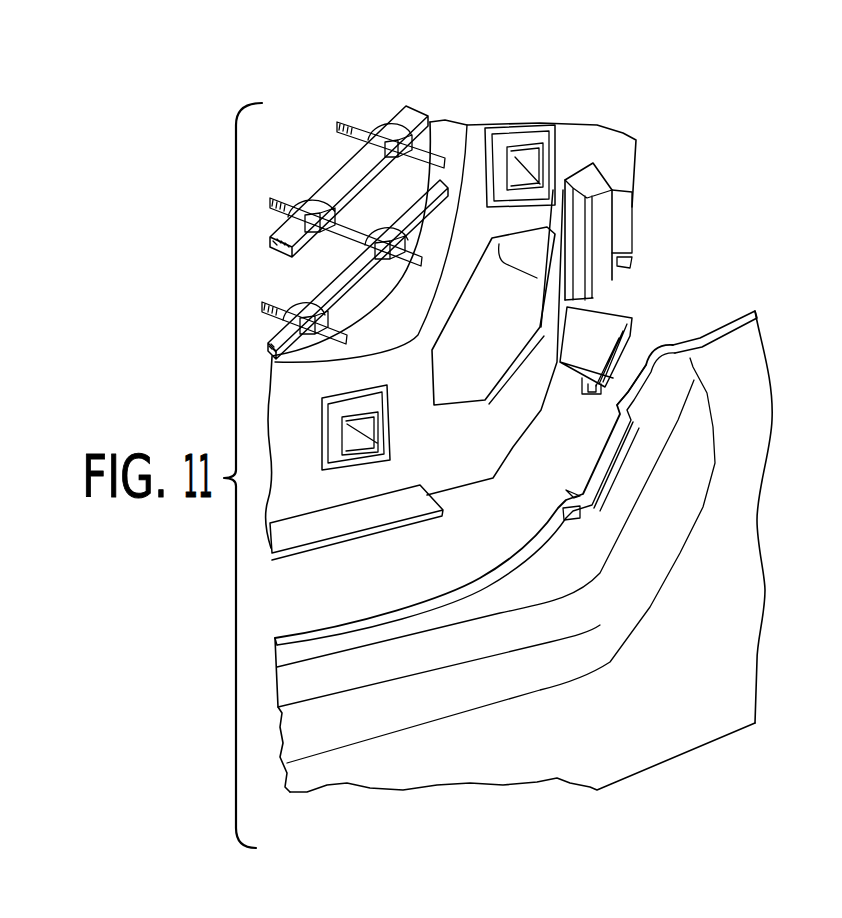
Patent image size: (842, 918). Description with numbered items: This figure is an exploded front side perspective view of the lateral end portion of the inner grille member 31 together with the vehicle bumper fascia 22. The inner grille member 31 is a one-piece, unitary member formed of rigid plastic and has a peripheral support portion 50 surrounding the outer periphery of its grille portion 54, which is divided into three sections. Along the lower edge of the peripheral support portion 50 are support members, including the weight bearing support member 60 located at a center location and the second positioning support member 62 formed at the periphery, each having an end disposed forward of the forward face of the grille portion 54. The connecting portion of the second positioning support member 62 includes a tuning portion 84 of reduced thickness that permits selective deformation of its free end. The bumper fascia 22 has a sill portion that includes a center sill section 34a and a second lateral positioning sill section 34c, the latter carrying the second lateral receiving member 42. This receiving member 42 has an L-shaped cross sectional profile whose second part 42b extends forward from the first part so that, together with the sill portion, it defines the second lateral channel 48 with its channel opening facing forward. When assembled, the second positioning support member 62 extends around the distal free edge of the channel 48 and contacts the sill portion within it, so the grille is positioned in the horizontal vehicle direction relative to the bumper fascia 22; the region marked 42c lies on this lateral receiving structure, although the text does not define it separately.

The inner grille member 31 is at (640, 158).
The grille portion 54 is at (338, 177).
The weight bearing support member 60 is at (372, 430).
The peripheral support portion 50 is at (310, 500).
The second positioning support member 62 is at (631, 302).
The tuning portion 84 is at (600, 388).
The vehicle bumper fascia 22 is at (766, 344).
The second lateral receiving member 42 is at (580, 471).
The second lateral channel 48 is at (610, 487).
The second part 42b is at (632, 444).
The lower flange portion 42c is at (573, 527).
The second lateral positioning sill section 34c is at (674, 403).
The center sill section 34a is at (313, 677).